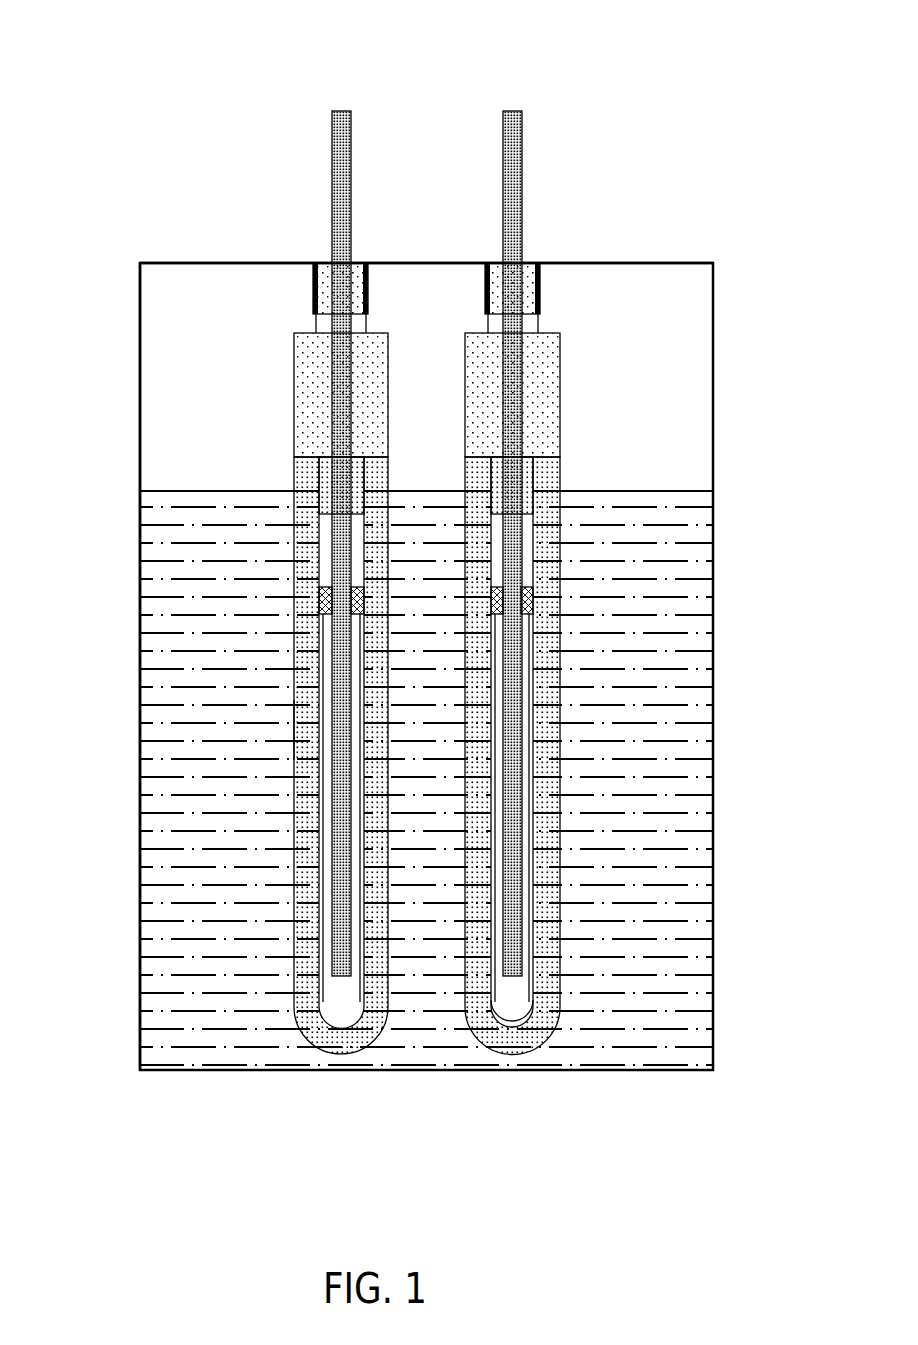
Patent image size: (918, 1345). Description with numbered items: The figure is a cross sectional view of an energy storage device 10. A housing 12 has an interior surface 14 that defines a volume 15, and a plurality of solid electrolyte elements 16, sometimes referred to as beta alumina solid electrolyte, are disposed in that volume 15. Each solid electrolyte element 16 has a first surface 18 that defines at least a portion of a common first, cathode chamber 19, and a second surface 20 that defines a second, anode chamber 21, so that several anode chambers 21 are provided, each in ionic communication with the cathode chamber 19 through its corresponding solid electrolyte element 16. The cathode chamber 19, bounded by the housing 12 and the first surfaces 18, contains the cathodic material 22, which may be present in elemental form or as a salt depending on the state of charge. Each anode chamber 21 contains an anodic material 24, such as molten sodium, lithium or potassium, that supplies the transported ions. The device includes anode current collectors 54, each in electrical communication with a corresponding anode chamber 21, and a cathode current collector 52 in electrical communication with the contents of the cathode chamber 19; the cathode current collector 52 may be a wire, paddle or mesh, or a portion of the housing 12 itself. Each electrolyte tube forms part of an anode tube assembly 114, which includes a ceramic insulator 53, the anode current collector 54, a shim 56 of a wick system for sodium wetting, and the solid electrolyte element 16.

The energy storage device 10 is at (176, 82).
The housing 12 is at (429, 615).
The interior surface 14 is at (140, 311).
The volume 15 is at (215, 297).
The solid electrolyte element 16 is at (293, 732).
The first surface 18 is at (292, 588).
The cathode chamber 19 is at (583, 290).
The second surface 20 is at (322, 540).
The anode chamber 21 is at (541, 565).
The cathodic material 22 is at (624, 485).
The anodic material 24 is at (517, 1007).
The cathode current collector 52 is at (625, 258).
The ceramic insulator 53 is at (380, 338).
The anode current collector 54 is at (523, 157).
The shim 56 is at (318, 607).
The anode tube assembly 114 is at (318, 257).